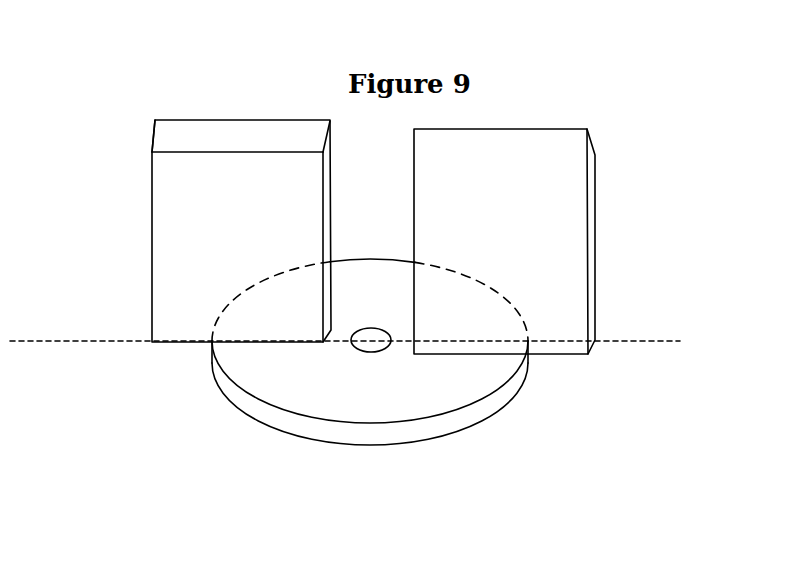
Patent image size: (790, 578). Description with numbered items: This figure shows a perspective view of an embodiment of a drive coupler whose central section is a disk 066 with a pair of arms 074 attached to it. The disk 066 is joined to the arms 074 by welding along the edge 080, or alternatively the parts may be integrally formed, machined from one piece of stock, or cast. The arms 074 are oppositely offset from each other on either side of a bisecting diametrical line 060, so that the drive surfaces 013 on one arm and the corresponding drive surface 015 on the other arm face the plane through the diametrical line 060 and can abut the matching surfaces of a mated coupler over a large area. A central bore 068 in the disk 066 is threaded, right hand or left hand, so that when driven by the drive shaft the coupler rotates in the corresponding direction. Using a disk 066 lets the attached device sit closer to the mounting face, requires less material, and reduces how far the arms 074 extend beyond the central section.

The arms 074 is at (189, 168).
The drive surfaces 013 is at (241, 231).
The second module 015 is at (501, 241).
The bisecting diametrical line 060 is at (616, 241).
The edge 080 is at (302, 342).
The threaded bore 068 is at (372, 348).
The disk 066 is at (283, 414).